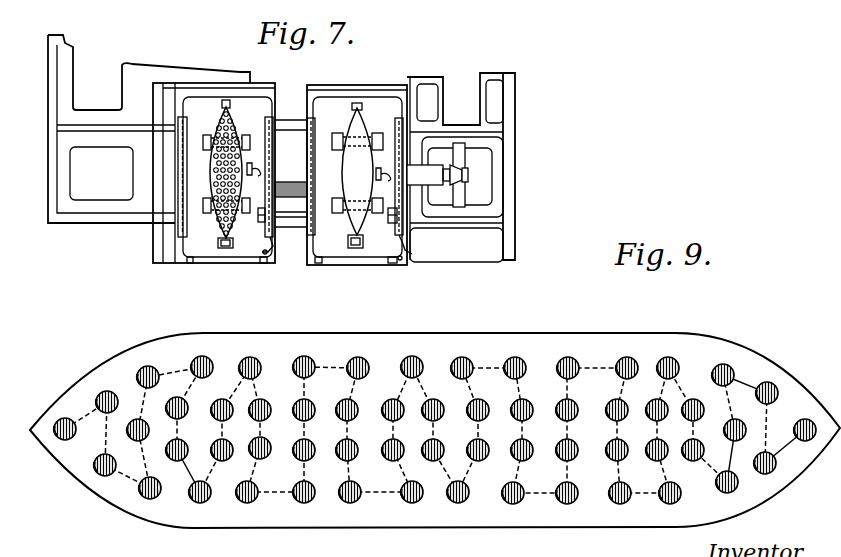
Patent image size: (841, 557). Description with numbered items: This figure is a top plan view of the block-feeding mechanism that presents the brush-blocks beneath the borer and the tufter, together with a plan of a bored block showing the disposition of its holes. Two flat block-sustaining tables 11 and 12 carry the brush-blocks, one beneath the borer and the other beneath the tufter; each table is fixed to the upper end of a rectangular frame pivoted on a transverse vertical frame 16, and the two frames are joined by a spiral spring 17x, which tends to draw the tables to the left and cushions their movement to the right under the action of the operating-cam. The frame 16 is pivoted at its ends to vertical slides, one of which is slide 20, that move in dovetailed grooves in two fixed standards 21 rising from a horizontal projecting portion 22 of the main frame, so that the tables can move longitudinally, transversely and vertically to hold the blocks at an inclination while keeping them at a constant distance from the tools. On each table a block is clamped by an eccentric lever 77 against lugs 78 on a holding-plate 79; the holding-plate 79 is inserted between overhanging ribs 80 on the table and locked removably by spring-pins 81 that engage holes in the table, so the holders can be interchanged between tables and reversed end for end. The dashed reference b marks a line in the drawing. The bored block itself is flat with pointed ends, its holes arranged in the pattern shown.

The block-sustaining table 11 is at (214, 173).
The block-sustaining table 12 is at (357, 175).
The transverse vertical frame 16 is at (461, 167).
The spiral spring 17x is at (287, 182).
The vertical slide 20 is at (468, 175).
The fixed standard 21 is at (460, 158).
The horizontal projecting portion of the main frame 22 is at (70, 222).
The eccentric lever 77 is at (377, 172).
The lug 78 is at (212, 137).
The holding-plate 79 is at (300, 191).
The overhanging rib 80 is at (180, 228).
The spring-pin 81 is at (272, 236).
The line b is at (331, 208).